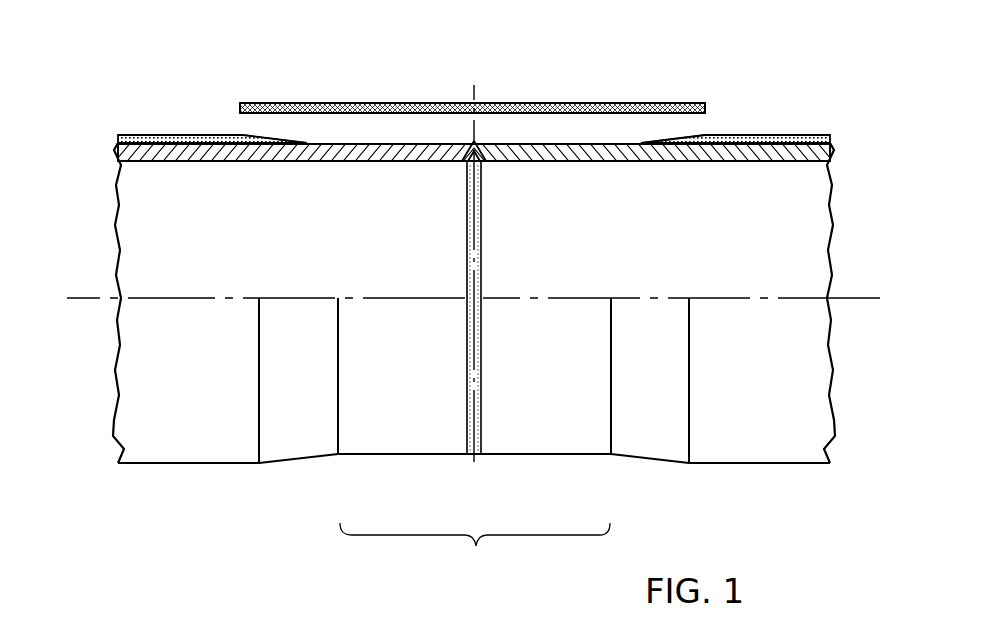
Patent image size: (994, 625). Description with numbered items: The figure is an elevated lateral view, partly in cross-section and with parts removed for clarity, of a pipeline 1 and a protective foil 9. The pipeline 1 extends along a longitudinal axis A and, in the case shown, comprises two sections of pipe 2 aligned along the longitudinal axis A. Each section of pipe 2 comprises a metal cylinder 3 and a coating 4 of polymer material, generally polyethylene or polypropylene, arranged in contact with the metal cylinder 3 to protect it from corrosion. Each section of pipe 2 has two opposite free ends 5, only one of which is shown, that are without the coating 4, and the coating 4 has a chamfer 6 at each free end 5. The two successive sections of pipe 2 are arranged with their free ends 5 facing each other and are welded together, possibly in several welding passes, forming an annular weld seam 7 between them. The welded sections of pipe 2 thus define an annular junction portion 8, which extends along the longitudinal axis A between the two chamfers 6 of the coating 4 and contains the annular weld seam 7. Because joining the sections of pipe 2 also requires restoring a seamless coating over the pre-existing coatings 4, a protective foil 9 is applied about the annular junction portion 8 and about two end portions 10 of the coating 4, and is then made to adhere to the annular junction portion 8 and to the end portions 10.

The pipeline 1 is at (882, 145).
The section of pipe 2 is at (148, 110).
The metal cylinder 3 is at (221, 160).
The coating 4 is at (131, 135).
The free end 5 is at (385, 458).
The chamfer 6 is at (282, 468).
The annular weld seam 7 is at (475, 455).
The annular junction portion 8 is at (480, 560).
The protective foil 9 is at (606, 103).
The end portion 10 is at (240, 133).
The longitudinal axis A is at (80, 296).